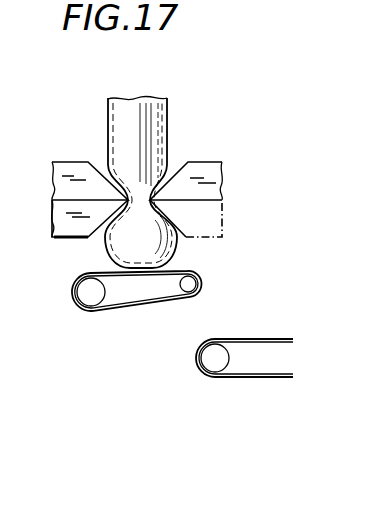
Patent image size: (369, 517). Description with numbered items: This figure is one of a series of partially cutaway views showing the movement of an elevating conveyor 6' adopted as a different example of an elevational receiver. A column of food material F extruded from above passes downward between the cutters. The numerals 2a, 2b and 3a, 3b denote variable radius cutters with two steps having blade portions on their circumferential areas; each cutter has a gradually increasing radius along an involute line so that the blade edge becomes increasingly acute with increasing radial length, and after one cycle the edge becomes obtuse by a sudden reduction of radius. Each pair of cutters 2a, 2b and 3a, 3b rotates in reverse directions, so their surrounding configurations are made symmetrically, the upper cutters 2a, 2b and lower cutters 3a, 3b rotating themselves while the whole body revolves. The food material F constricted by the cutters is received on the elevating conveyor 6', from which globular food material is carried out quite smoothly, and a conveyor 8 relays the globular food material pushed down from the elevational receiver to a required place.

The food material F is at (168, 122).
The variable radius cutter 2a is at (68, 168).
The variable radius cutter 2b is at (212, 163).
The variable radius cutter 3a is at (55, 225).
The variable radius cutter 3b is at (217, 225).
The elevating conveyor 6' is at (137, 317).
The conveyor 8 is at (257, 338).